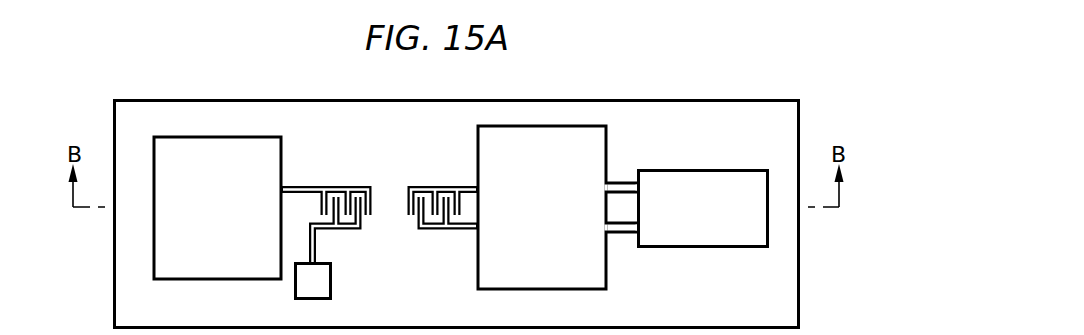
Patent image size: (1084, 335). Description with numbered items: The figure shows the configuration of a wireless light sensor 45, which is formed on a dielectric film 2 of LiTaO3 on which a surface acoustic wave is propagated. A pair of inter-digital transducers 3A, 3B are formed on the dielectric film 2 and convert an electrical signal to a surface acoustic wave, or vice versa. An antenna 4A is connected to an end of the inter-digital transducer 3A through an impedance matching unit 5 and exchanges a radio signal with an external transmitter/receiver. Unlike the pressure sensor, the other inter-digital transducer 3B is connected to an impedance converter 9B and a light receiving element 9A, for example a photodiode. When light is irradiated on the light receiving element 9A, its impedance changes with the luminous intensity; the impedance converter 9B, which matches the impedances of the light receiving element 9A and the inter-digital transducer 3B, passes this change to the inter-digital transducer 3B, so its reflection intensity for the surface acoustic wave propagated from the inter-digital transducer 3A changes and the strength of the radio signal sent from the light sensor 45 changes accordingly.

The dielectric film 2 is at (193, 106).
The inter-digital transducer 3A is at (323, 186).
The inter-digital transducer 3B is at (432, 186).
The antenna 4A is at (192, 279).
The impedance matching unit 5 is at (331, 292).
The light receiving element 9A is at (700, 248).
The impedance converter 9B is at (575, 290).
The light sensor 45 is at (722, 80).